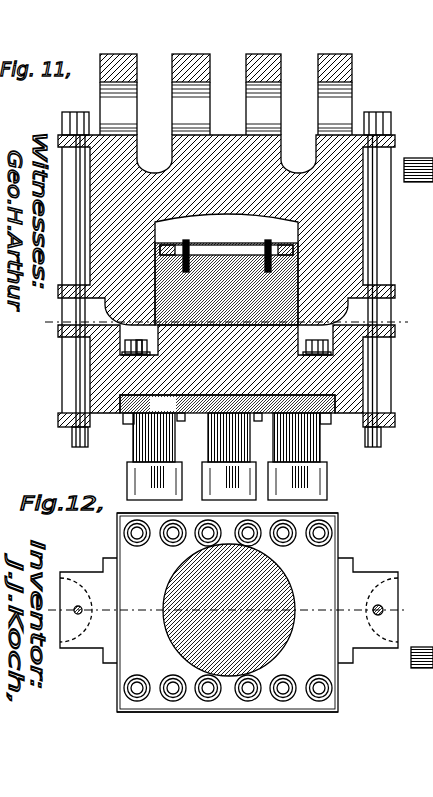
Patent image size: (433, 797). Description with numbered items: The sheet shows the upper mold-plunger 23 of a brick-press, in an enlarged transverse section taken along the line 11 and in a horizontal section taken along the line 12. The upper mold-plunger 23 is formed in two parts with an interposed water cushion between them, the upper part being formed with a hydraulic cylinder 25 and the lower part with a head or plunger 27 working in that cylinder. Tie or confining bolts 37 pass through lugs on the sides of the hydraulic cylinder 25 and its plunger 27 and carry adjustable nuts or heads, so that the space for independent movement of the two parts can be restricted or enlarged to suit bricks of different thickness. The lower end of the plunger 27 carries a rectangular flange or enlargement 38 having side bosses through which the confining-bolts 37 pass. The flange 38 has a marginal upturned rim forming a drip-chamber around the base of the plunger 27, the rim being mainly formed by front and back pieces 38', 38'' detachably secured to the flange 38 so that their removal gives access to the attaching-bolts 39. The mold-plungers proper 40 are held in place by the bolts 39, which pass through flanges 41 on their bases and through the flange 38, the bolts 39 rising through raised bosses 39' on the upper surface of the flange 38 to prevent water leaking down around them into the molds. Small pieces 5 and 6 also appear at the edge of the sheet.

In FIG. 11, the end cap 5 is at (418, 157).
In FIG. 12, the end cap 6 is at (419, 670).
In FIG. 12, the section line 11 is at (234, 611).
In FIG. 11, the section line 12 is at (229, 324).
In FIG. 11, the upper mold-plunger 23 is at (226, 94).
In FIG. 11, the hydraulic cylinder 25 is at (226, 230).
In FIG. 11, the head or plunger 27 is at (226, 282).
In FIG. 12, the head or plunger 27 is at (229, 610).
In FIG. 11, the tie or confining bolts 37 is at (399, 394).
In FIG. 12, the tie or confining bolts 37 is at (83, 610).
In FIG. 11, the flange or enlargement 38 is at (226, 369).
In FIG. 12, the flange or enlargement 38 is at (229, 612).
In FIG. 12, the front piece 38' is at (224, 526).
In FIG. 12, the back piece 38'' is at (223, 716).
In FIG. 11, the attaching-bolts 39 is at (189, 397).
In FIG. 12, the attaching-bolts 39 is at (228, 610).
In FIG. 11, the raised bosses 39' is at (82, 364).
In FIG. 11, the mold-plungers 40 is at (212, 460).
In FIG. 11, the flanges 41 is at (227, 404).